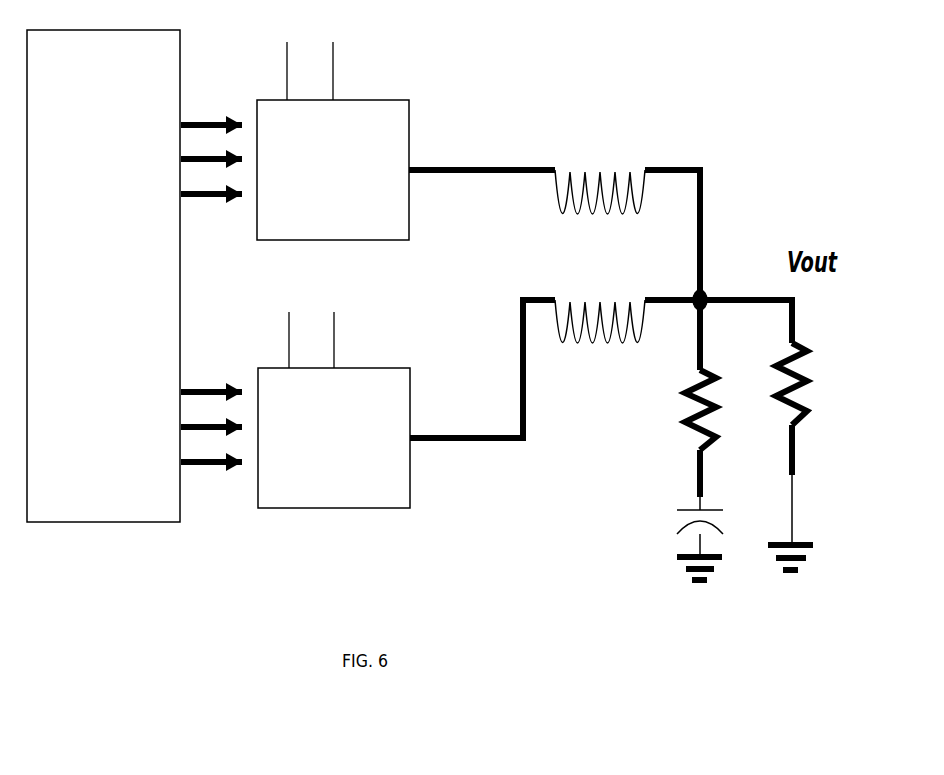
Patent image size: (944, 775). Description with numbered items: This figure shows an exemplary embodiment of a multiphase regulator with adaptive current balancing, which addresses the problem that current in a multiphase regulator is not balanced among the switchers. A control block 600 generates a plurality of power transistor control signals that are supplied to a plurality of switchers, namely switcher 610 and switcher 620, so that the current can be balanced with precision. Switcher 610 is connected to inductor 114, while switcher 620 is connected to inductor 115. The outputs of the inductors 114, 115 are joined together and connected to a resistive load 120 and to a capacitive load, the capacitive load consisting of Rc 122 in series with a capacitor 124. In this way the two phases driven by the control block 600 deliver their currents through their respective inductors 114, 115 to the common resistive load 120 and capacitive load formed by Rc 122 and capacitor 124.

The control block 600 is at (103, 276).
The switcher 610 is at (377, 121).
The switcher 620 is at (380, 387).
The inductor 114 is at (600, 155).
The inductor 115 is at (601, 293).
The resistive load 120 is at (814, 456).
The Rc 122 is at (675, 421).
The capacitor 124 is at (675, 538).